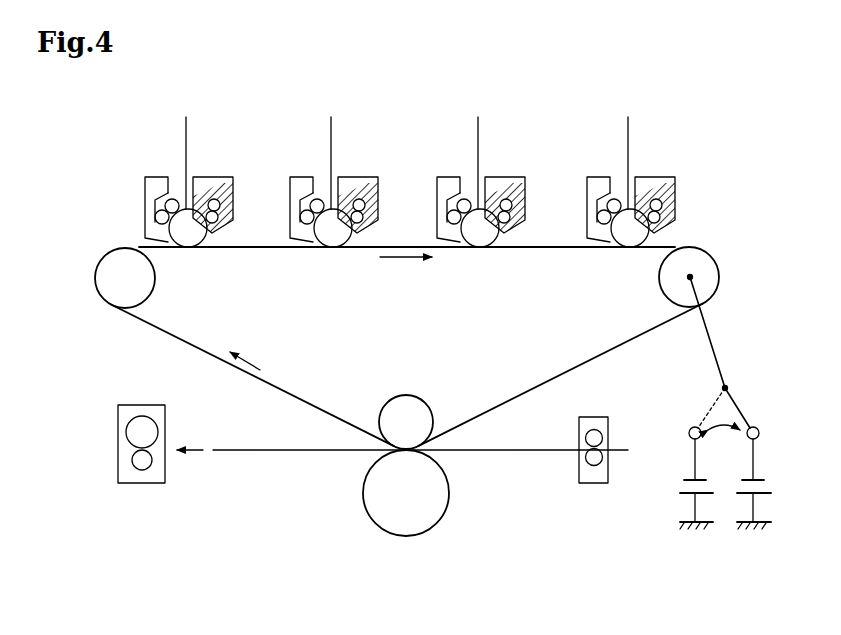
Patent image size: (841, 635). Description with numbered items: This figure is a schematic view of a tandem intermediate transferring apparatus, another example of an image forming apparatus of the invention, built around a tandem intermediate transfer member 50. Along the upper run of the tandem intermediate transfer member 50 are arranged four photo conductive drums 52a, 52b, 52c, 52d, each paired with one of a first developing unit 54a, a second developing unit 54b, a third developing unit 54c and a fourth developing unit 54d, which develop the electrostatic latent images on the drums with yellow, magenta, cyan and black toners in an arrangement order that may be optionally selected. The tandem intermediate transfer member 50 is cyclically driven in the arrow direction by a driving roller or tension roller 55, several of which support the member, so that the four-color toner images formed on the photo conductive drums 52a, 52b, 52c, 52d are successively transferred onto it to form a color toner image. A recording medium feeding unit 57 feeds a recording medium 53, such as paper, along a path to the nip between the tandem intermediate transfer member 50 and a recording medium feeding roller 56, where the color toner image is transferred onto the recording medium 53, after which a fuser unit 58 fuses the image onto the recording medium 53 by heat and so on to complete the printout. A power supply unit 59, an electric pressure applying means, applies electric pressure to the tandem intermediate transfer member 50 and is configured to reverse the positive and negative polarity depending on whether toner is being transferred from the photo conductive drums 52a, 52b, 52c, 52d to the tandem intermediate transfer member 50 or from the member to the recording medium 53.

The tandem intermediate transfer member 50 is at (178, 340).
The photo conductive drum 52a is at (149, 228).
The photo conductive drum 52b is at (293, 228).
The photo conductive drum 52c is at (441, 228).
The photo conductive drum 52d is at (590, 228).
The recording medium 53 is at (520, 450).
The first developing unit 54a is at (215, 166).
The second developing unit 54b is at (360, 166).
The third developing unit 54c is at (507, 166).
The fourth developing unit 54d is at (657, 166).
The driving roller or tension roller 55 is at (113, 276).
The recording medium feeding roller 56 is at (406, 533).
The recording medium feeding unit 57 is at (597, 483).
The fuser unit 58 is at (142, 483).
The power supply unit 59 is at (746, 396).